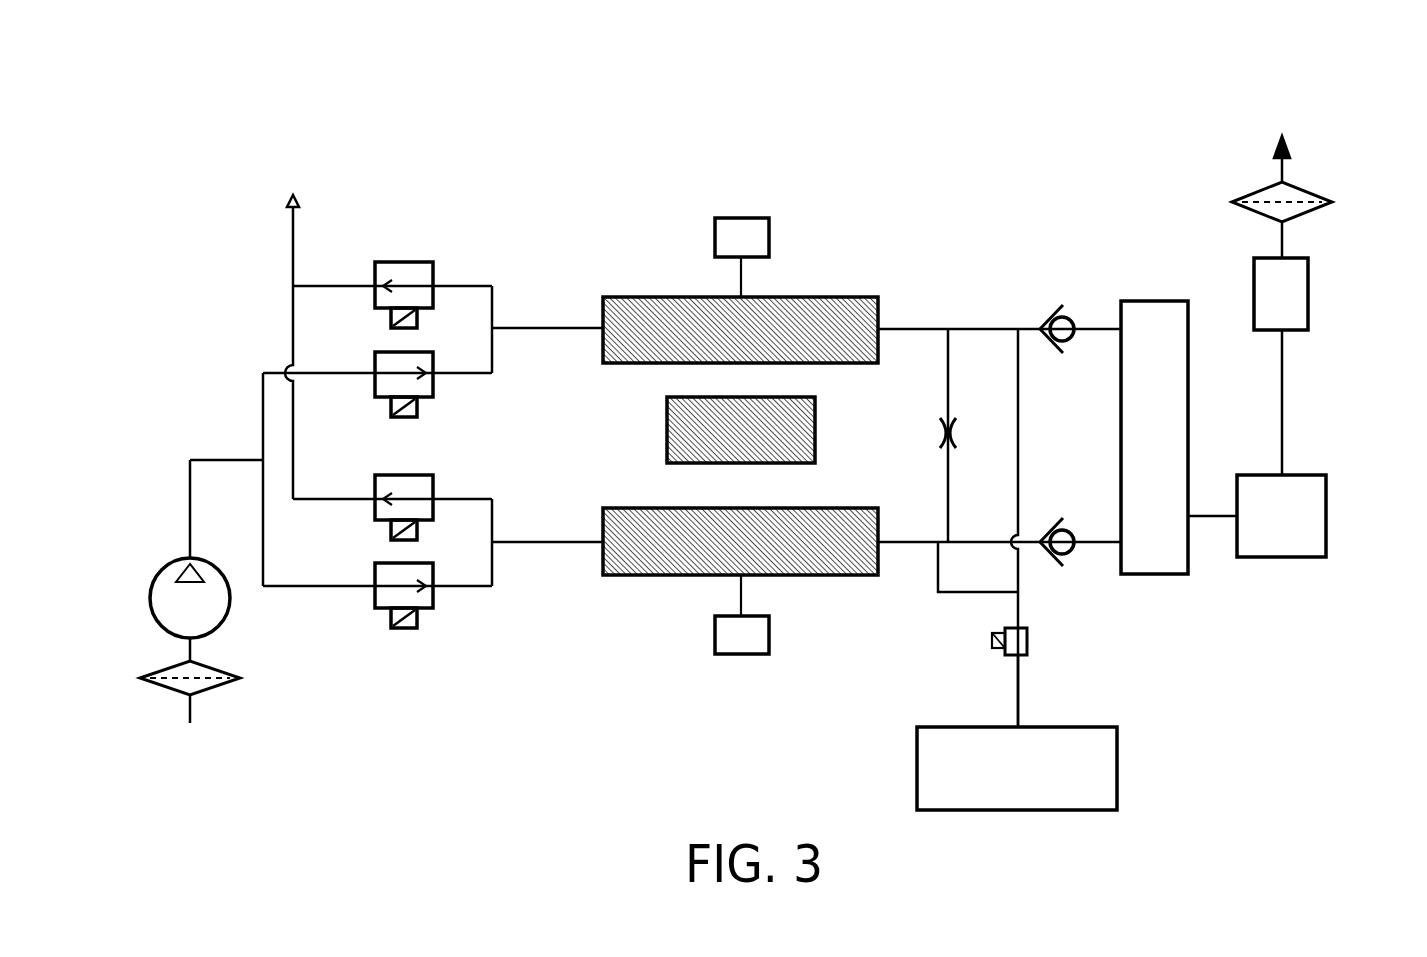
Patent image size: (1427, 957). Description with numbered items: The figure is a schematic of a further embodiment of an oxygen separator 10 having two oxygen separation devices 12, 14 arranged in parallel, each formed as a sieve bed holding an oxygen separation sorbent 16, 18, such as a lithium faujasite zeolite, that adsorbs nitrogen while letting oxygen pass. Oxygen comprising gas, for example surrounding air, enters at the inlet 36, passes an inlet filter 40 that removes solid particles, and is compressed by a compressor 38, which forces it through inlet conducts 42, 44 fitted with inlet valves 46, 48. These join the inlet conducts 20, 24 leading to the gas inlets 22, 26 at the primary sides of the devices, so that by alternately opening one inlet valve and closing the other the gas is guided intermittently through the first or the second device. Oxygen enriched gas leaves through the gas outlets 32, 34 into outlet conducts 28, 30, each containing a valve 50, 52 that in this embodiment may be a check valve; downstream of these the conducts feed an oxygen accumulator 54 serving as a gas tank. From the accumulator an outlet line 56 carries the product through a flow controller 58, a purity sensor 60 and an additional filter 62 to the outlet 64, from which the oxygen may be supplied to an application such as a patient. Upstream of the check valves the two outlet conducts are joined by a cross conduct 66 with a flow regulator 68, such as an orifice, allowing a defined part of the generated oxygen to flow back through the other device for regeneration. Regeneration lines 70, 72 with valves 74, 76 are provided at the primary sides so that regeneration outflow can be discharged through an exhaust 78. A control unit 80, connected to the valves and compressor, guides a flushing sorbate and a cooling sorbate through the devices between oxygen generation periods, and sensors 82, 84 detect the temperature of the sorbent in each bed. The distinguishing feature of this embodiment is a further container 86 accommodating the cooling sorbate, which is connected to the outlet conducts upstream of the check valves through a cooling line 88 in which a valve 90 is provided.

The oxygen separator 10 is at (178, 135).
The oxygen separation device 12 is at (826, 297).
The oxygen separation device 14 is at (823, 576).
The oxygen separation sorbent 16 is at (668, 325).
The oxygen separation sorbent 18 is at (668, 548).
The inlet conduct 20 is at (512, 328).
The gas inlet 22 is at (597, 328).
The inlet conduct 24 is at (518, 543).
The gas inlet 26 is at (598, 543).
The outlet conduct 28 is at (980, 329).
The outlet conduct 30 is at (1094, 543).
The gas outlet 32 is at (885, 329).
The gas outlet 34 is at (882, 545).
The inlet 36 is at (190, 712).
The compressor 38 is at (150, 600).
The inlet filter 40 is at (178, 668).
The inlet conduct 42 is at (322, 373).
The inlet conduct 44 is at (322, 586).
The inlet valve 46 is at (433, 388).
The inlet valve 48 is at (407, 630).
The valve 50 is at (1068, 307).
The valve 52 is at (1058, 557).
The oxygen accumulator 54 is at (1150, 300).
The outlet line 56 is at (1282, 405).
The flow controller 58 is at (1326, 520).
The purity sensor 60 is at (1308, 292).
The additional filter 62 is at (1320, 196).
The outlet 64 is at (1287, 150).
The cross conduct 66 is at (948, 488).
The flow regulator 68 is at (938, 433).
The regeneration line 70 is at (322, 286).
The regeneration line 72 is at (322, 499).
The valve 74 is at (401, 262).
The valve 76 is at (433, 481).
The exhaust 78 is at (284, 199).
The control unit 80 is at (667, 428).
The sensor 82 is at (741, 217).
The sensor 84 is at (741, 654).
The container 86 is at (1117, 760).
The cooling line 88 is at (1018, 683).
The valve 90 is at (992, 640).